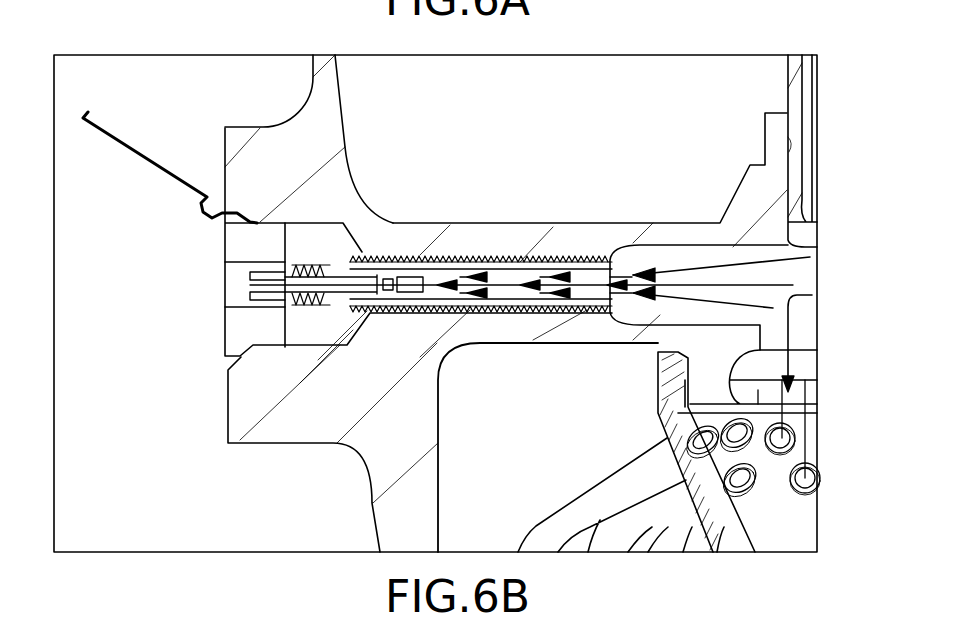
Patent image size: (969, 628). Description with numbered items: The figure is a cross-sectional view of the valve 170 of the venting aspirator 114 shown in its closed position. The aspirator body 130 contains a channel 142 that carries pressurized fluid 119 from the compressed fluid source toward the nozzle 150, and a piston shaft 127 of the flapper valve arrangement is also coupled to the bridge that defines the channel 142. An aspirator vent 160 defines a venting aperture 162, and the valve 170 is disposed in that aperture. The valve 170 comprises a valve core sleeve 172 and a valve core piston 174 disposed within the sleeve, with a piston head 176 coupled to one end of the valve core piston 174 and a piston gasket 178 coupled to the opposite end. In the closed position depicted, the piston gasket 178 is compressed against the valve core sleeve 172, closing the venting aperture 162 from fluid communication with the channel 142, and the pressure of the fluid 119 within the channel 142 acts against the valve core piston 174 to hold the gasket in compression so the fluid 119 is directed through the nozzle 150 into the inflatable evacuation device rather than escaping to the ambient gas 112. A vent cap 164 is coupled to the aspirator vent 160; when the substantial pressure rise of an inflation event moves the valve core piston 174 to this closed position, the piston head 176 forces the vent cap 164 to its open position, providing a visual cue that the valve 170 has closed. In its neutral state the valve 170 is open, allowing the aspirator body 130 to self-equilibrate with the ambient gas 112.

The ambient gas 112 is at (128, 204).
The venting aspirator 114 is at (587, 104).
The fluid 119 is at (717, 244).
The piston shaft 127 is at (788, 82).
The aspirator body 130 is at (307, 89).
The channel 142 is at (640, 222).
The nozzle 150 is at (657, 417).
The aspirator vent 160 is at (228, 395).
The venting aperture 162 is at (307, 345).
The vent cap 164 is at (155, 168).
The valve 170 is at (393, 258).
The valve core sleeve 172 is at (335, 265).
The valve core piston 174 is at (310, 280).
The piston head 176 is at (268, 268).
The piston gasket 178 is at (433, 256).